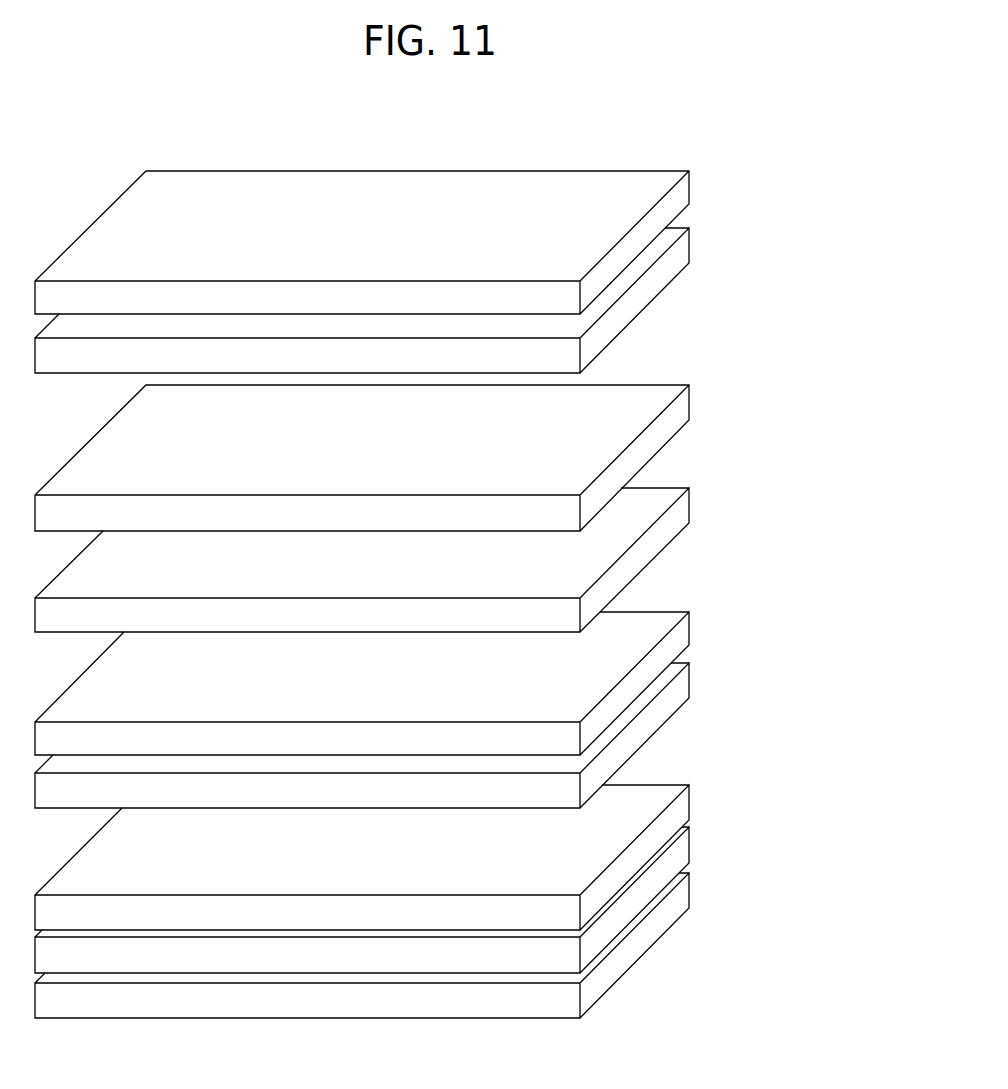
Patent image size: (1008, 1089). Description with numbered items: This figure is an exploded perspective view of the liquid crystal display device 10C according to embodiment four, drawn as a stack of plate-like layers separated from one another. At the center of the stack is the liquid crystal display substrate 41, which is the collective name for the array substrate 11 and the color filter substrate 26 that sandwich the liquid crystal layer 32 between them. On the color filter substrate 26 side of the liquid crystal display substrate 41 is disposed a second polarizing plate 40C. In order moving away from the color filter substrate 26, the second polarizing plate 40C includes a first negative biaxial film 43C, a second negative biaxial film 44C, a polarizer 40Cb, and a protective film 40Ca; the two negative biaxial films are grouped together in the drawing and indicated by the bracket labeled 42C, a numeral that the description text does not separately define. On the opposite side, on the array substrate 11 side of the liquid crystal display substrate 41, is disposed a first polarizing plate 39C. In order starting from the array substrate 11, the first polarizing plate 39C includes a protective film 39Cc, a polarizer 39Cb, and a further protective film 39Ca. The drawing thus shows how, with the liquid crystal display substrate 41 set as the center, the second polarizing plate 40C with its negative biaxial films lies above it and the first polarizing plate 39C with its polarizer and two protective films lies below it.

The liquid crystal display device 10C is at (545, 121).
The second polarizing plate 40C is at (472, 294).
The protective film 40Ca is at (676, 203).
The polarizer 40Cb is at (420, 294).
The optical member 42C is at (443, 499).
The second negative biaxial film 44C is at (676, 417).
The first negative biaxial film 43C is at (412, 550).
The liquid crystal display substrate 41 is at (428, 699).
The color filter substrate 26 is at (676, 645).
The liquid crystal layer 32 is at (676, 672).
The array substrate 11 is at (404, 730).
The first polarizing plate 39C is at (448, 894).
The protective film 39Cc is at (676, 817).
The polarizer 39Cb is at (676, 860).
The protective film 39Ca is at (418, 938).